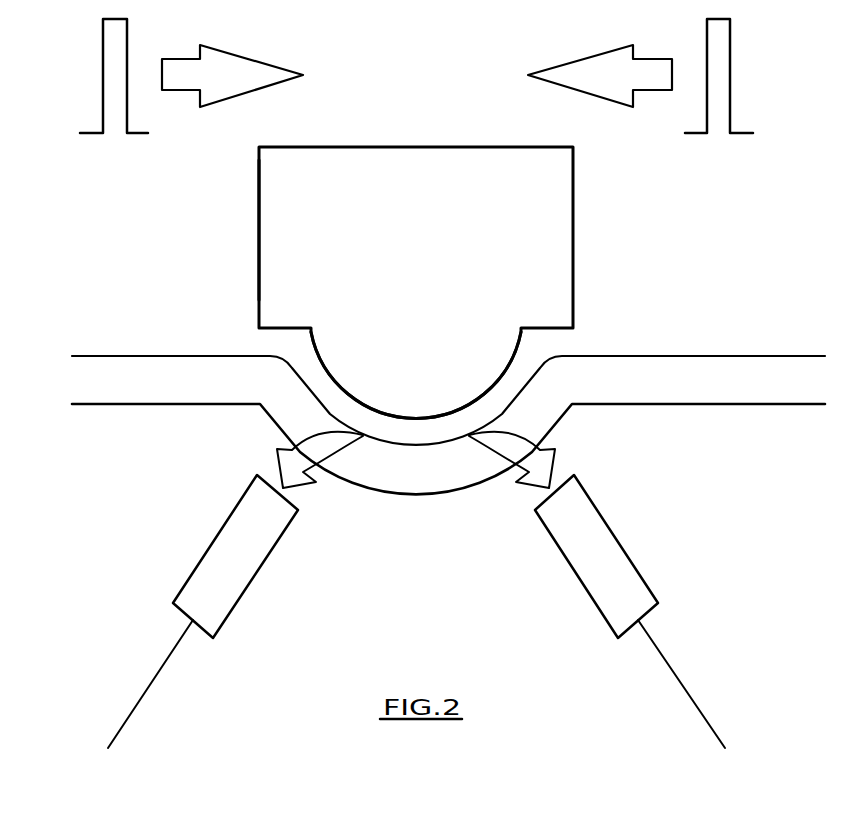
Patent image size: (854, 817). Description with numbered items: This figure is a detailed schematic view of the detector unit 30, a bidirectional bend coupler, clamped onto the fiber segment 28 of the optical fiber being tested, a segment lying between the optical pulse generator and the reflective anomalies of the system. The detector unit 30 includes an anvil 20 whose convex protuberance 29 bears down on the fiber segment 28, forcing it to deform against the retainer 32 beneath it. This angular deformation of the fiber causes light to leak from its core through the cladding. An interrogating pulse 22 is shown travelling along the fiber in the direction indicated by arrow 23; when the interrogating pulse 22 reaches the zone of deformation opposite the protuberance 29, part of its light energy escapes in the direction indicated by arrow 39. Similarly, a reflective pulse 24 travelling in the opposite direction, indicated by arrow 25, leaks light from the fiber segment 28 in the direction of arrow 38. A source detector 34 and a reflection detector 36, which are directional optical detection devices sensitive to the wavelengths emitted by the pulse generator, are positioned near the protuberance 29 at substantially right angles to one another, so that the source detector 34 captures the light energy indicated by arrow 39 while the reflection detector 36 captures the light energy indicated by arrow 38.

The anvil 20 is at (573, 220).
The interrogating pulse 22 is at (103, 35).
The arrow indicating direction of interrogating pulse 23 is at (258, 60).
The reflective pulse 24 is at (730, 33).
The arrow indicating direction of reflective pulse 25 is at (578, 60).
The fiber segment 28 is at (672, 357).
The convex protuberance 29 is at (345, 367).
The detector unit 30 is at (259, 213).
The retainer 32 is at (683, 405).
The source detector 34 is at (643, 577).
The reflection detector 36 is at (190, 575).
The arrow indicating leaked light from reflective pulse 38 is at (289, 447).
The arrow indicating leaked light from interrogating pulse 39 is at (543, 447).